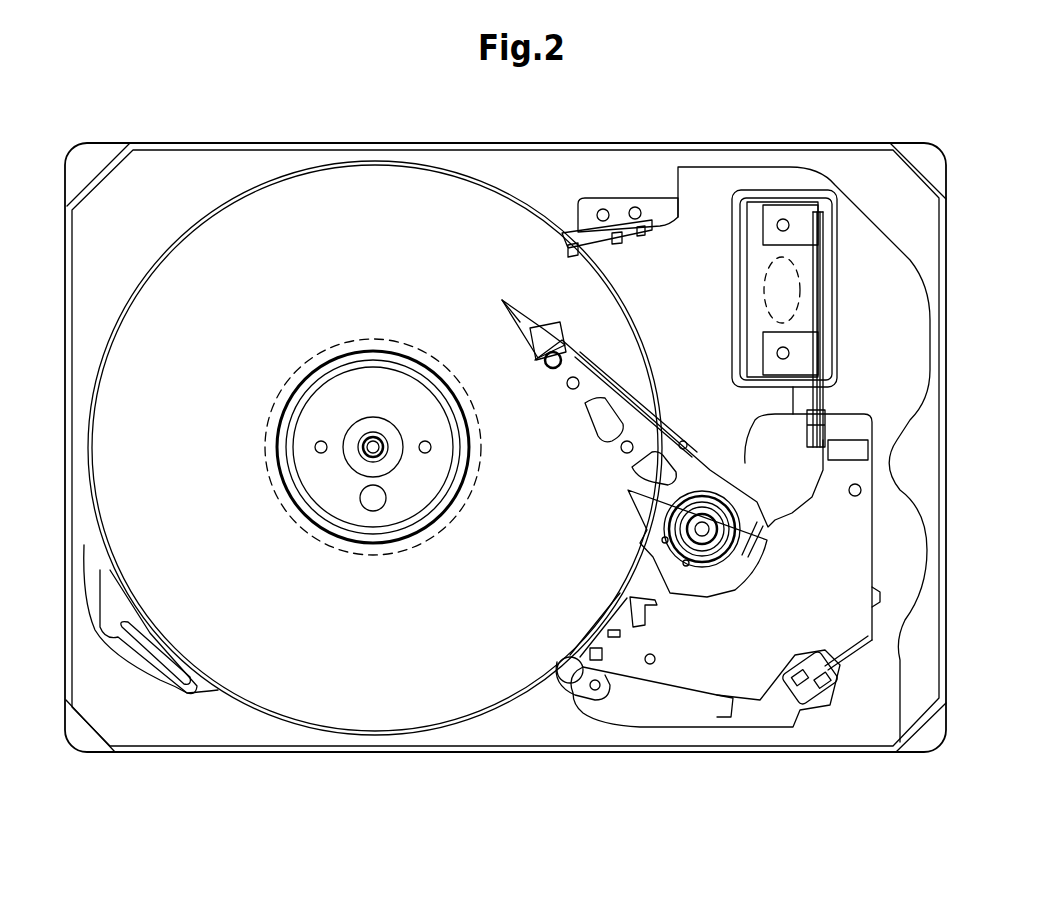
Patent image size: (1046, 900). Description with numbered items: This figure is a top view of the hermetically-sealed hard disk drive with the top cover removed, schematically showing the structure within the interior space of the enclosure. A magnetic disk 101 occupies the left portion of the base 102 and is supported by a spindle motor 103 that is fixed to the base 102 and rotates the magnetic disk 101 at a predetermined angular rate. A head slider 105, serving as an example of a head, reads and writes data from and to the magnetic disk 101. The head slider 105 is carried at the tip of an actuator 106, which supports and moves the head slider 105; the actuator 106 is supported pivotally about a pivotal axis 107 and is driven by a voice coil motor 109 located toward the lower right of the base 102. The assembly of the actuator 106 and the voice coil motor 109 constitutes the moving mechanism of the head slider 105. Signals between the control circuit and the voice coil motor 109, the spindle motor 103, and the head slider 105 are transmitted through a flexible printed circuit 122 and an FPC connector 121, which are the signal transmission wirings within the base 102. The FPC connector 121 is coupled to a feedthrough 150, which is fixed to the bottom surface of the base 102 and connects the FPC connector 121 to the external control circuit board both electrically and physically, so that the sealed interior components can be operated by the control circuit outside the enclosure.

The magnetic disk 101 is at (630, 312).
The base 102 is at (432, 753).
The spindle motor 103 is at (348, 552).
The head slider 105 is at (507, 309).
The actuator 106 is at (558, 418).
The pivotal axis 107 is at (645, 535).
The voice coil motor 109 is at (636, 698).
The FPC connector 121 is at (838, 340).
The flexible printed circuit 122 is at (742, 455).
The feedthrough 150 is at (745, 300).